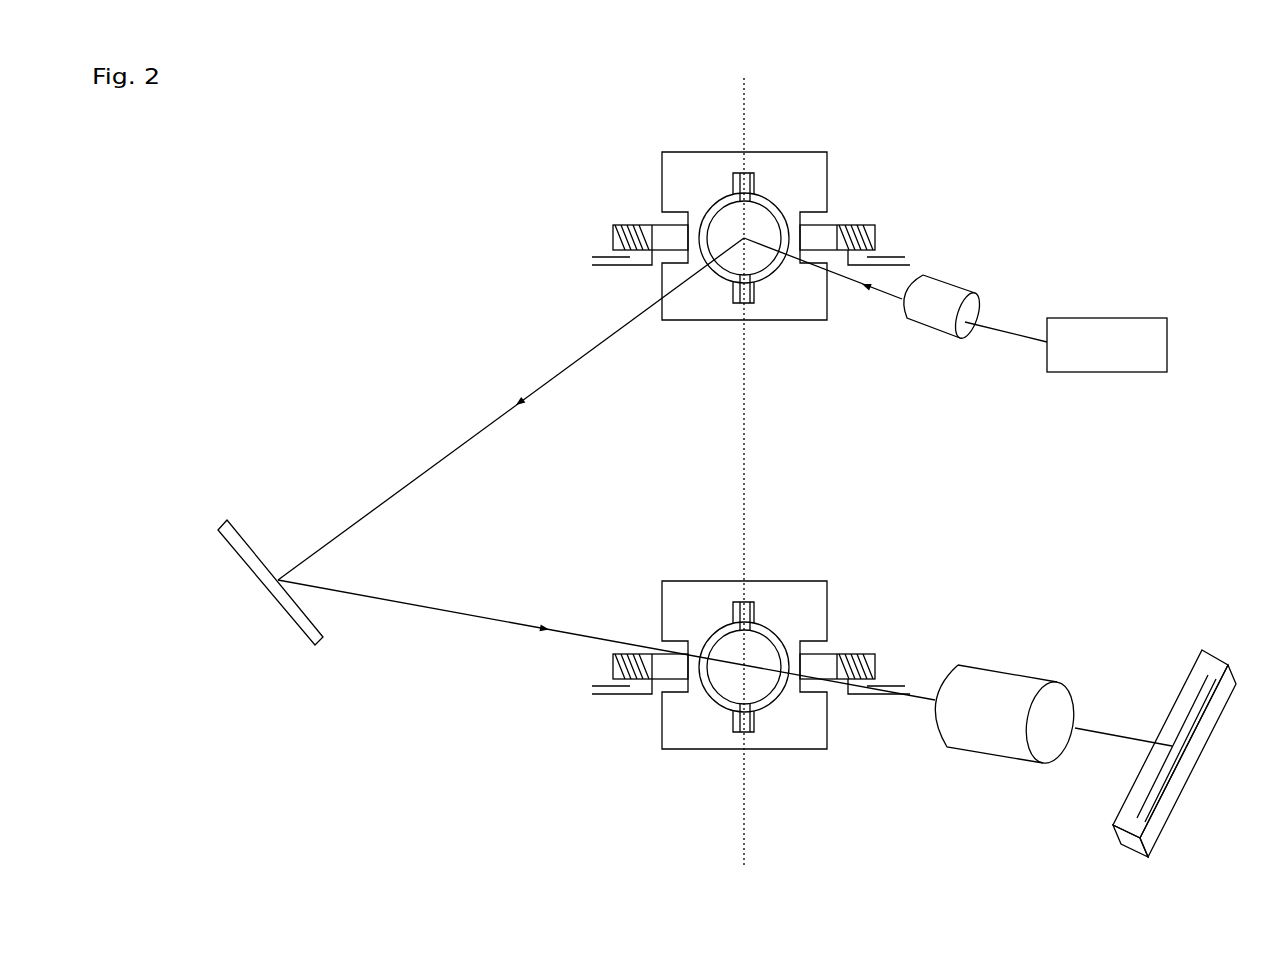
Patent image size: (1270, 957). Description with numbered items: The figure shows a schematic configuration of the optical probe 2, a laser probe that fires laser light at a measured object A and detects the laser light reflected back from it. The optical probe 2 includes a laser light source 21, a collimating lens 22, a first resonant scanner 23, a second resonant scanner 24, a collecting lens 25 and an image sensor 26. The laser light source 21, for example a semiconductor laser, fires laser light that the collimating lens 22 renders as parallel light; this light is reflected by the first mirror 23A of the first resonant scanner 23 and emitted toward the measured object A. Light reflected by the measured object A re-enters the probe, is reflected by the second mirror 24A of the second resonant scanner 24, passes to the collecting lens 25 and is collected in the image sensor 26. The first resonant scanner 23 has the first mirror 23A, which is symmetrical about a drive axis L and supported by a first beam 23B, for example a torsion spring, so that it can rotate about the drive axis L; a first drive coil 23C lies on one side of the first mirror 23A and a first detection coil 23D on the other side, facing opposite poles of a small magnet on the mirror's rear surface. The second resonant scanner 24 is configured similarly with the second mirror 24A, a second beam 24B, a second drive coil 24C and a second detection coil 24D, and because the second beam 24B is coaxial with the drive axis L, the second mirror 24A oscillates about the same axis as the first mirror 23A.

The optical probe 2 is at (1072, 152).
The laser light source 21 is at (1105, 318).
The collimating lens 22 is at (946, 276).
The first resonant scanner 23 is at (833, 160).
The first mirror 23A is at (770, 197).
The first beam 23B is at (762, 172).
The first drive coil 23C is at (857, 223).
The first detection coil 23D is at (647, 221).
The second resonant scanner 24 is at (831, 589).
The second mirror 24A is at (770, 627).
The second beam 24B is at (762, 602).
The second drive coil 24C is at (857, 651).
The second detection coil 24D is at (610, 665).
The collecting lens 25 is at (1008, 668).
The image sensor 26 is at (1217, 652).
The measured object A is at (243, 528).
The drive axis L is at (745, 459).